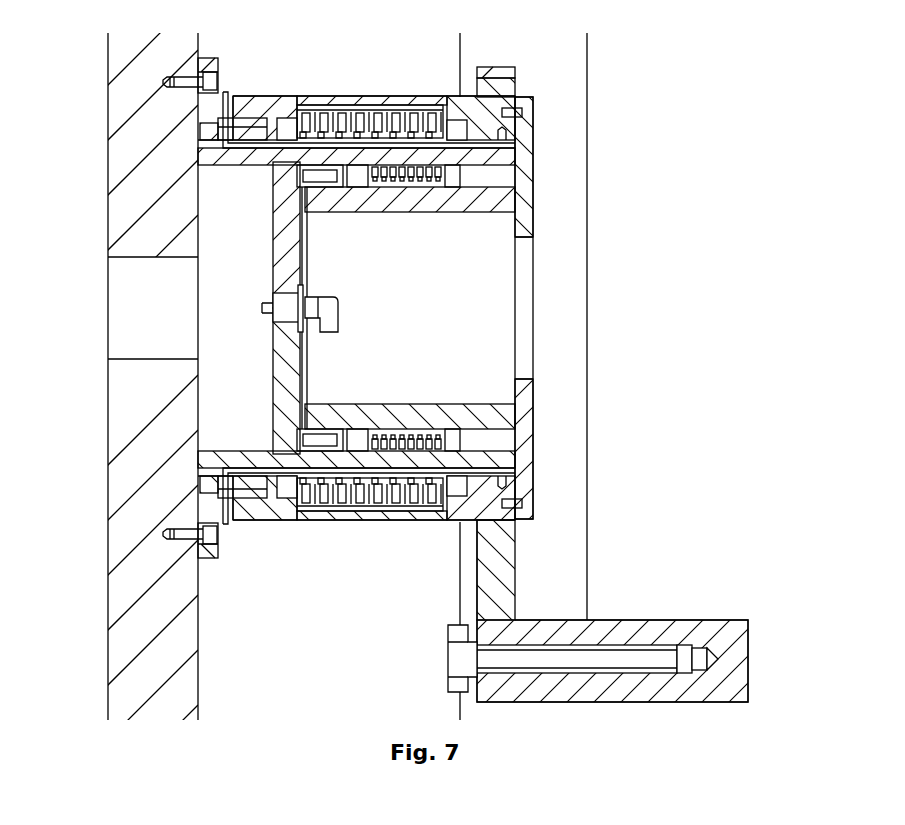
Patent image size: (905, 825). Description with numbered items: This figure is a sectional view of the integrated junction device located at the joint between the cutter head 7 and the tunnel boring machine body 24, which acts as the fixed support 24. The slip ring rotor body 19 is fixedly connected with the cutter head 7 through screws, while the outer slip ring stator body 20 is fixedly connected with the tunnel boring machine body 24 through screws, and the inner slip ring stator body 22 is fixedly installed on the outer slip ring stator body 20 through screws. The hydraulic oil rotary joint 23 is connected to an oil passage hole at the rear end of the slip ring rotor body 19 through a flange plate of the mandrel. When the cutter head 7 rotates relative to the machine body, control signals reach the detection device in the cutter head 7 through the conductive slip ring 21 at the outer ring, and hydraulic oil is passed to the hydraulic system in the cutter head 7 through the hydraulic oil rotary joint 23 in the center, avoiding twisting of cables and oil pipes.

The cutter head 7 is at (155, 415).
The slip ring rotor body 19 is at (210, 117).
The outer slip ring stator body 20 is at (282, 101).
The conductive slip ring 21 is at (342, 124).
The inner slip ring stator body 22 is at (533, 172).
The hydraulic oil rotary joint 23 is at (342, 312).
The tunnel boring machine body 24 is at (687, 630).